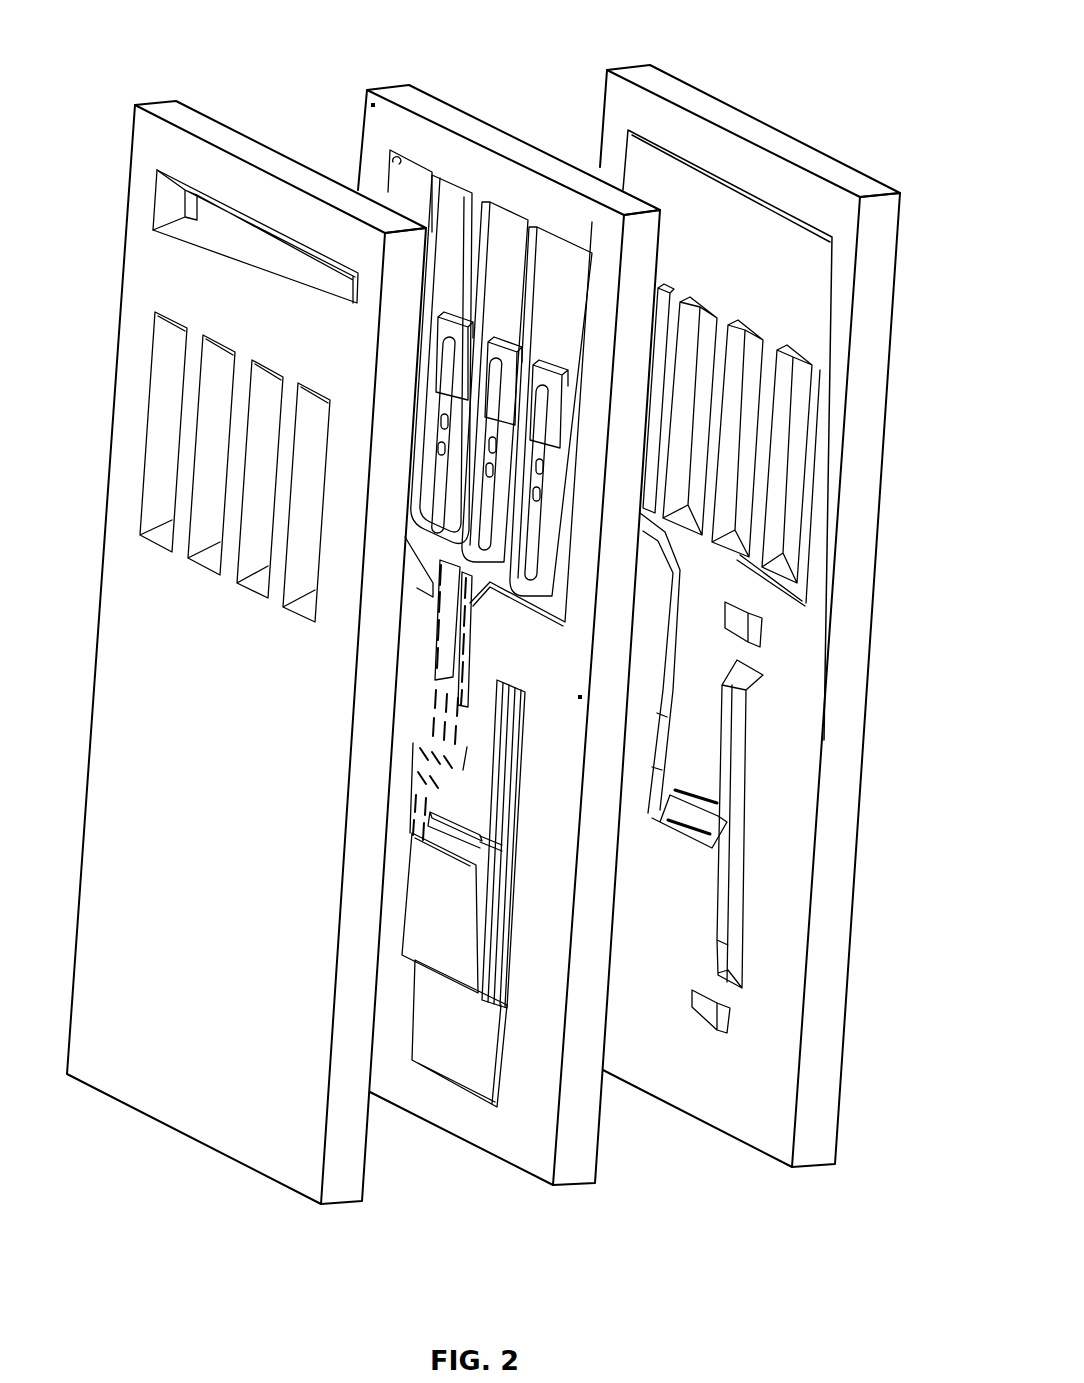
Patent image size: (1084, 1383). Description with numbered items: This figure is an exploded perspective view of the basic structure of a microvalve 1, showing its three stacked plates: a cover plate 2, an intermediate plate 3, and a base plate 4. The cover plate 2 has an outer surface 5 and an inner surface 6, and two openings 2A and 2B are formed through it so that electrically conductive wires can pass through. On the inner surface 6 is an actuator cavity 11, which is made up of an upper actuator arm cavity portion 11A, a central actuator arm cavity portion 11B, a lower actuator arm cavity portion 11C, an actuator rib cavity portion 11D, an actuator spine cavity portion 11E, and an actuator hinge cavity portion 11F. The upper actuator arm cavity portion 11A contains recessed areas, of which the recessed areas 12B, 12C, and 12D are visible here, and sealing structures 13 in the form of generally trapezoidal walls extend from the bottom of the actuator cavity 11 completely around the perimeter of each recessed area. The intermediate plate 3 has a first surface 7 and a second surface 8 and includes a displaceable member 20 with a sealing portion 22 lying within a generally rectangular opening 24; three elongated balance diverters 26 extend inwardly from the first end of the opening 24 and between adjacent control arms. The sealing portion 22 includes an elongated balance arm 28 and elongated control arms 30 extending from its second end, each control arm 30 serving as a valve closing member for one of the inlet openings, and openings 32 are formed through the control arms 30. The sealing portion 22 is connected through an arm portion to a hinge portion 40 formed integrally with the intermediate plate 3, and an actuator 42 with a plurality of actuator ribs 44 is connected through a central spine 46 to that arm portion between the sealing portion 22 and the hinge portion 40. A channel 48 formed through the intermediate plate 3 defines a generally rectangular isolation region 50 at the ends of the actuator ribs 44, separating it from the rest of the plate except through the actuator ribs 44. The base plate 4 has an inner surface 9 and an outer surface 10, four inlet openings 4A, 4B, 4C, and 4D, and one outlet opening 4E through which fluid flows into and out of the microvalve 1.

The microvalve 1 is at (289, 27).
The cover plate 2 is at (750, 600).
The opening 2A is at (753, 627).
The opening 2B is at (700, 1010).
The intermediate plate 3 is at (478, 620).
The base plate 4 is at (234, 638).
The inlet opening 4A is at (158, 510).
The inlet opening 4B is at (200, 547).
The inlet opening 4C is at (248, 567).
The inlet opening 4D is at (293, 593).
The outlet opening 4E is at (287, 257).
The outer surface 5 is at (668, 72).
The inner surface 6 is at (613, 118).
The first surface 7 is at (427, 93).
The second surface 8 is at (370, 125).
The inner surface 9 is at (195, 110).
The outer surface 10 is at (142, 155).
The actuator cavity 11 is at (777, 233).
The upper actuator arm cavity portion 11A is at (715, 200).
The central actuator arm cavity portion 11B is at (690, 668).
The lower actuator arm cavity portion 11C is at (655, 770).
The actuator rib cavity portion 11D is at (690, 800).
The actuator spine cavity portion 11E is at (745, 745).
The actuator hinge cavity portion 11F is at (680, 825).
The recessed area 12B is at (690, 302).
The recessed area 12C is at (735, 330).
The recessed area 12D is at (785, 400).
The sealing structures 13 is at (658, 288).
The displaceable member 20 is at (470, 658).
The sealing portion 22 is at (553, 605).
The opening 24 is at (393, 160).
The balance diverters 26 is at (533, 227).
The balance arm 28 is at (440, 652).
The control arms 30 is at (452, 318).
The openings 32 is at (537, 507).
The hinge portion 40 is at (453, 857).
The actuator 42 is at (508, 848).
The actuator ribs 44 is at (517, 732).
The central spine 46 is at (453, 810).
The channel 48 is at (505, 1053).
The isolation region 50 is at (458, 1065).